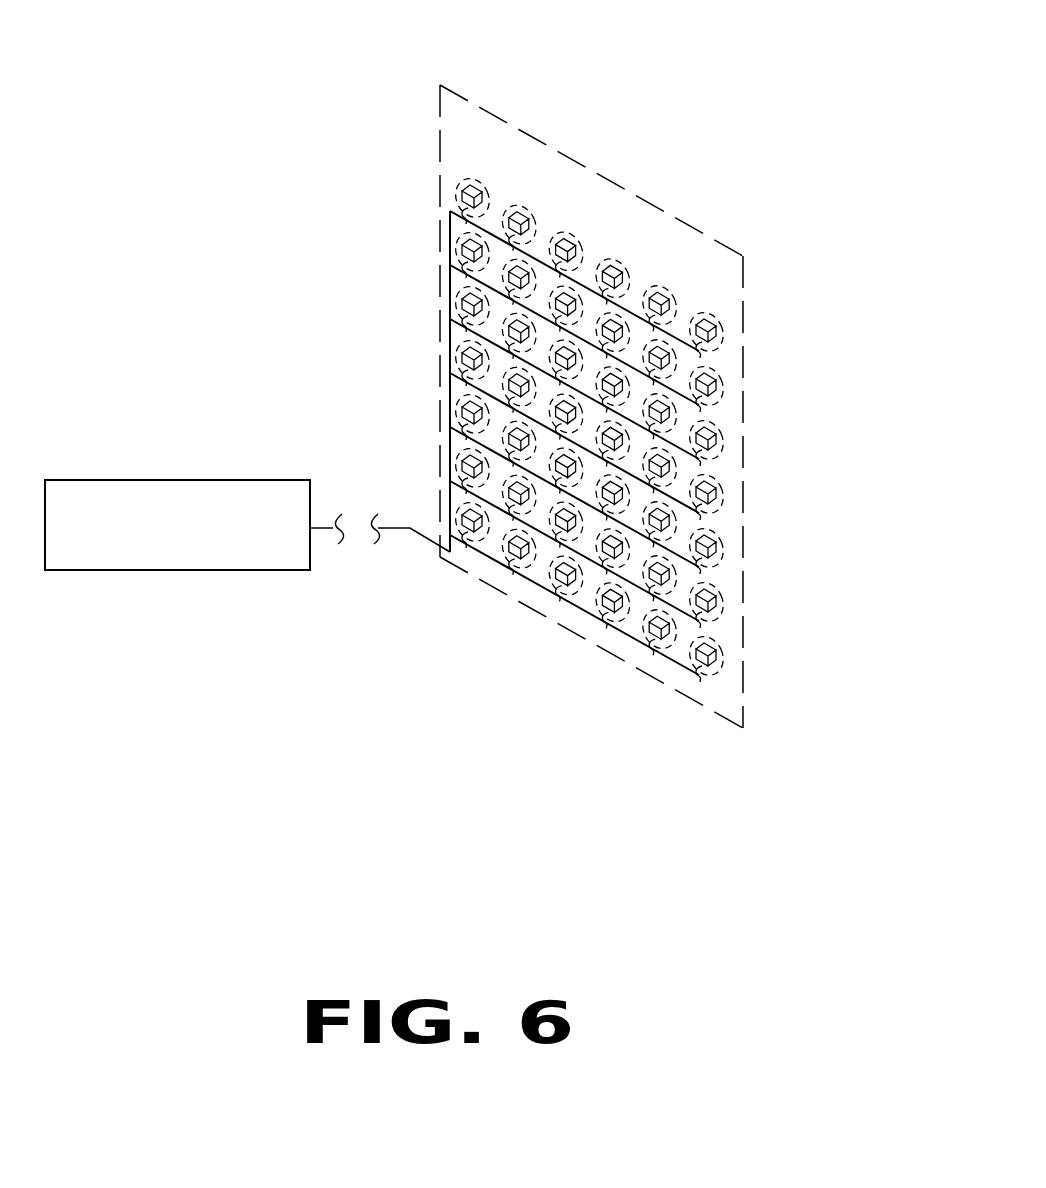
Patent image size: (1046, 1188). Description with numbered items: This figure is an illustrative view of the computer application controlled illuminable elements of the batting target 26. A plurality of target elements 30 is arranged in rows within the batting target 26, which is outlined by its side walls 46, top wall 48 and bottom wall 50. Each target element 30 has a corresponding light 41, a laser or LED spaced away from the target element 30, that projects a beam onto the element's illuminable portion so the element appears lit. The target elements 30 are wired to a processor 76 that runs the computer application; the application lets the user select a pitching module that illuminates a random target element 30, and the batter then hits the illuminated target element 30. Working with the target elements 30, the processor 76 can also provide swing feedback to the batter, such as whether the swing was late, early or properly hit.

The batting target 26 is at (590, 375).
The target element 30 is at (448, 168).
The light 41 is at (578, 228).
The side wall 46 is at (440, 347).
The top wall 48 is at (522, 140).
The bottom wall 50 is at (580, 628).
The processor 76 is at (168, 478).